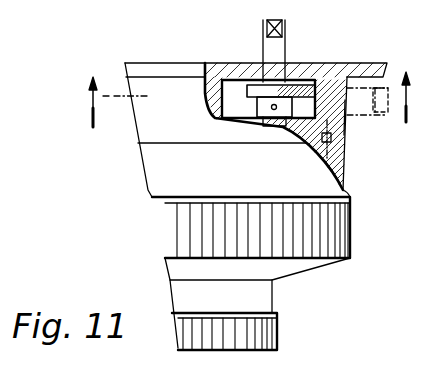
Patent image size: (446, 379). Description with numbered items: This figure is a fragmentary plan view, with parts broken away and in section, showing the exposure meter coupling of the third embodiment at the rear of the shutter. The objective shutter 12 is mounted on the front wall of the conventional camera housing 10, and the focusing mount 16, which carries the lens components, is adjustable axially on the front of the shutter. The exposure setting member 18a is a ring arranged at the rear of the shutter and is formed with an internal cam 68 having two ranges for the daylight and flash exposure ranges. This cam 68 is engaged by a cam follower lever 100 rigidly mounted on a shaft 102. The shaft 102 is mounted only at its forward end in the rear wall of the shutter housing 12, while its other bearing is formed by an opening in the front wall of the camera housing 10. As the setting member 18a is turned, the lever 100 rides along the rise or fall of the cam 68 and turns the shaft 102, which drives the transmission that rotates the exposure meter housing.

The camera housing 10 is at (226, 73).
The shaft 102 is at (272, 50).
The cam follower lever 100 is at (297, 90).
The internal cam 68 is at (323, 65).
The setting member 18a is at (343, 117).
The objective shutter 12 is at (337, 160).
The focusing mount 16 is at (277, 332).